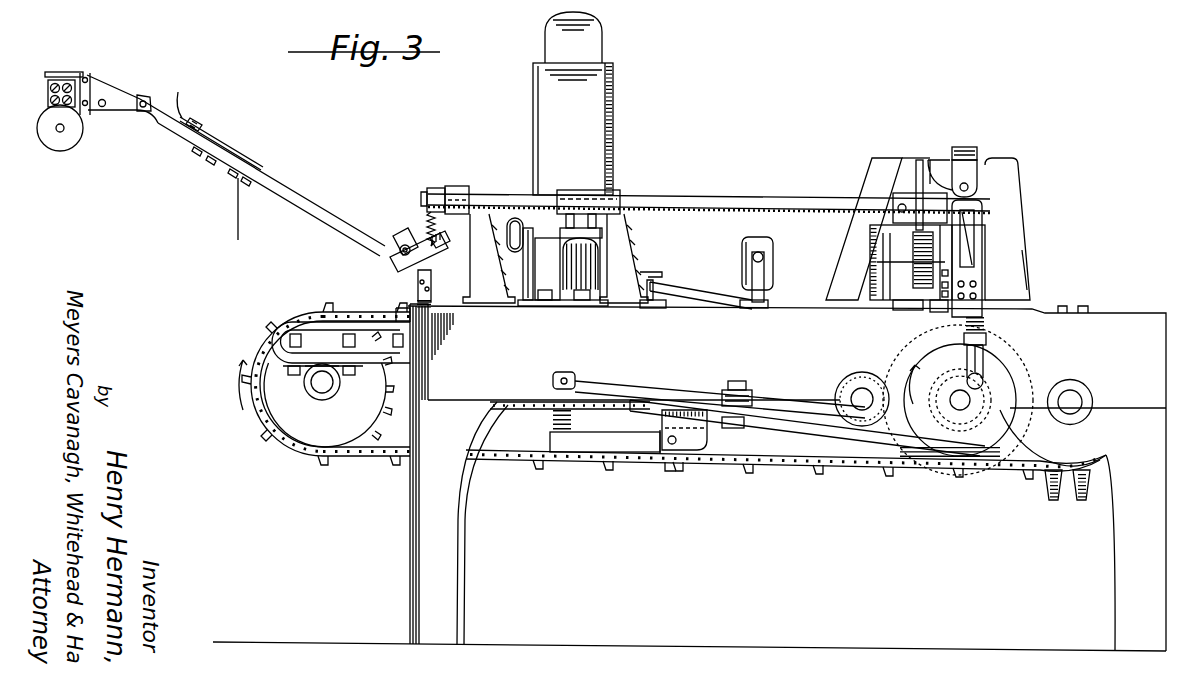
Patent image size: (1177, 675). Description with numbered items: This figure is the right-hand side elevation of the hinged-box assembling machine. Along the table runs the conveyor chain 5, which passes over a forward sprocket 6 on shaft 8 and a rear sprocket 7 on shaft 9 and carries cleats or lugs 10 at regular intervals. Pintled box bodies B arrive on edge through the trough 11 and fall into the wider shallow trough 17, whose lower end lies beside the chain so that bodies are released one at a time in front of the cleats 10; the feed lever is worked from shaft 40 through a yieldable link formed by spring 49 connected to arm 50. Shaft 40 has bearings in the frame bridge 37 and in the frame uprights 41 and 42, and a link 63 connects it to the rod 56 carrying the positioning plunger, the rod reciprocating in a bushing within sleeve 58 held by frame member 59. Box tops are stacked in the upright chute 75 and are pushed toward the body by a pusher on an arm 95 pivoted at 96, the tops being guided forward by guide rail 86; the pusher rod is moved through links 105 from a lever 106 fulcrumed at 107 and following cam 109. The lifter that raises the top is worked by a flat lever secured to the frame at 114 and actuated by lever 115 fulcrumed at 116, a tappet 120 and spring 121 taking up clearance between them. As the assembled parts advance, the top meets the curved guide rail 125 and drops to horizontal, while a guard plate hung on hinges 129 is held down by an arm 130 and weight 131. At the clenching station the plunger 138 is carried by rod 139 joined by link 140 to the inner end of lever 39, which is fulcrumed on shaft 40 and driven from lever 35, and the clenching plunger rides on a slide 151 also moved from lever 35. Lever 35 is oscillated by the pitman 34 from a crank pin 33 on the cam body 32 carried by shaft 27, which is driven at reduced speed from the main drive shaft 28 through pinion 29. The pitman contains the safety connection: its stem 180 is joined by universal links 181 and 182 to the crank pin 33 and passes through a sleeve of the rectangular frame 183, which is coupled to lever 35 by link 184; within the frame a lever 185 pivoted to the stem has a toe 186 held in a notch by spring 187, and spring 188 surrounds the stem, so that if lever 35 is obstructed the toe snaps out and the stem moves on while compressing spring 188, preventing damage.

The box body B is at (78, 72).
The trough 11 is at (90, 74).
The wider shallow trough 17 is at (298, 198).
The arm 50 is at (428, 198).
The spring 49 is at (428, 222).
The frame upright 41 is at (463, 186).
The pivot 96 is at (525, 232).
The link 63 is at (577, 205).
The rod 56 is at (585, 215).
The upright chute 75 is at (613, 127).
The shaft 40 is at (731, 203).
The sleeve 58 is at (567, 264).
The arm 95 is at (523, 263).
The frame member 59 is at (553, 298).
The frame upright 42 is at (622, 240).
The guide rail 86 is at (652, 271).
The guide rail 125 is at (690, 290).
The arm 130 is at (752, 278).
The weight 131 is at (755, 238).
The hinges 129 is at (652, 308).
The frame bridge member 37 is at (928, 229).
The lever 39 is at (893, 210).
The link 140 is at (882, 235).
The rod 139 is at (913, 252).
The lever 35 is at (965, 147).
The link 184 is at (985, 178).
The spring 187 is at (982, 210).
The rectangular frame 183 is at (985, 232).
The lever 185 is at (975, 250).
The pitman 34 is at (1025, 246).
The toe 186 is at (975, 271).
The spring 188 is at (982, 303).
The stem 180 is at (984, 325).
The universal link 181 is at (985, 338).
The universal link 182 is at (983, 352).
The crank pin 33 is at (983, 381).
The cam body 32 is at (1010, 378).
The shaft 9 is at (1072, 400).
The shaft 27 is at (962, 400).
The rear sprocket 7 is at (1090, 438).
The plunger 138 is at (905, 305).
The slide 151 is at (938, 310).
The links 105 is at (566, 372).
The lever 106 is at (608, 382).
The securing point 114 is at (690, 408).
The fulcrum 107 is at (742, 381).
The pinion 29 is at (842, 384).
The main drive shaft 28 is at (862, 395).
The cam 109 is at (900, 350).
The spring 121 is at (553, 420).
The tappet 120 is at (605, 431).
The lever 115 is at (636, 433).
The fulcrum 116 is at (665, 472).
The cleats 10 is at (602, 465).
The conveyor chain 5 is at (500, 462).
The forward sprocket 6 is at (290, 436).
The shaft 8 is at (326, 390).